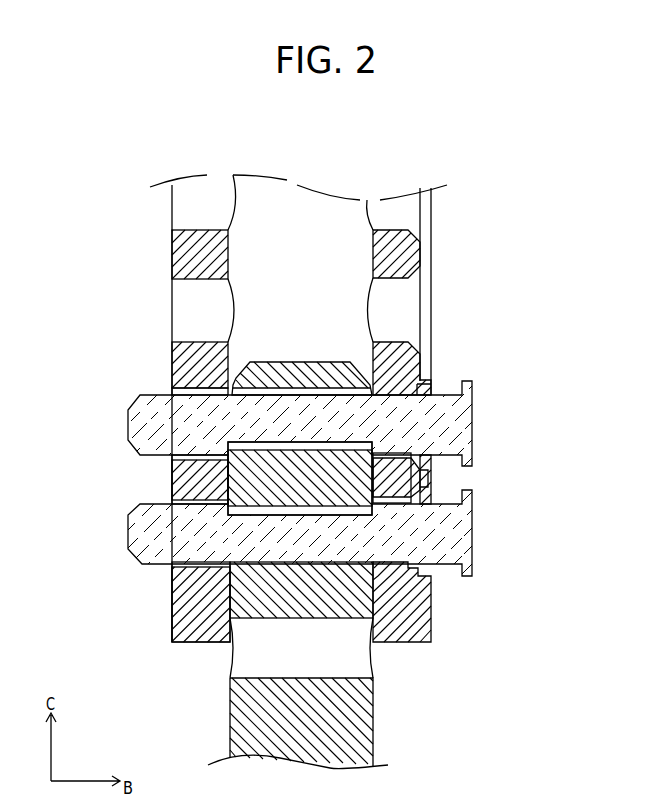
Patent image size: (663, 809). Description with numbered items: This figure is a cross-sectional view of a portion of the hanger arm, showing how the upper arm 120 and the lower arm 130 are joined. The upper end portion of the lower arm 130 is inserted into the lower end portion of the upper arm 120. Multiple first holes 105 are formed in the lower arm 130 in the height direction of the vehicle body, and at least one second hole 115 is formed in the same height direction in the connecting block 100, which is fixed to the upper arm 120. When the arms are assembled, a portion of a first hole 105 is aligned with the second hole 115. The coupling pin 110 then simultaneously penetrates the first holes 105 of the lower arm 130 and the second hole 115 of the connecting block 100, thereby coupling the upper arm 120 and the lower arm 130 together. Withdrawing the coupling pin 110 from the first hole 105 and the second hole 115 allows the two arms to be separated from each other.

The connecting block 100 is at (425, 248).
The first hole 105 is at (370, 648).
The coupling pin 110 is at (472, 515).
The second hole 115 is at (368, 307).
The upper arm 120 is at (293, 228).
The lower arm 130 is at (374, 715).